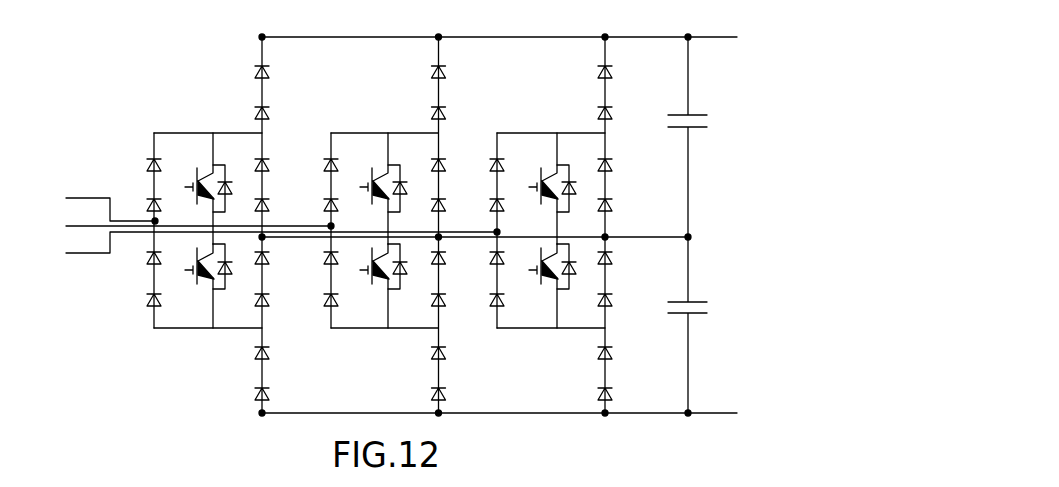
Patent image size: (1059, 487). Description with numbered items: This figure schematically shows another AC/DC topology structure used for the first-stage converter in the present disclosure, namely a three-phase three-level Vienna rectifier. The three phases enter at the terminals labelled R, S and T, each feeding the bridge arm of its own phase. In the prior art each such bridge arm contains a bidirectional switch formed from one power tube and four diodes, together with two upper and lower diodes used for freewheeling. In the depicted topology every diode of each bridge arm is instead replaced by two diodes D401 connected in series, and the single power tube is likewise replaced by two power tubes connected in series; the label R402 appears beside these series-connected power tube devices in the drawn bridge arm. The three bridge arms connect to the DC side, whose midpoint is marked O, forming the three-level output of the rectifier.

The gate resistor R402 is at (175, 363).
The diode D401 is at (292, 225).
The phase R input terminal R is at (101, 204).
The phase S input terminal S is at (189, 225).
The phase T input terminal T is at (272, 247).
The DC-link midpoint O is at (484, 225).